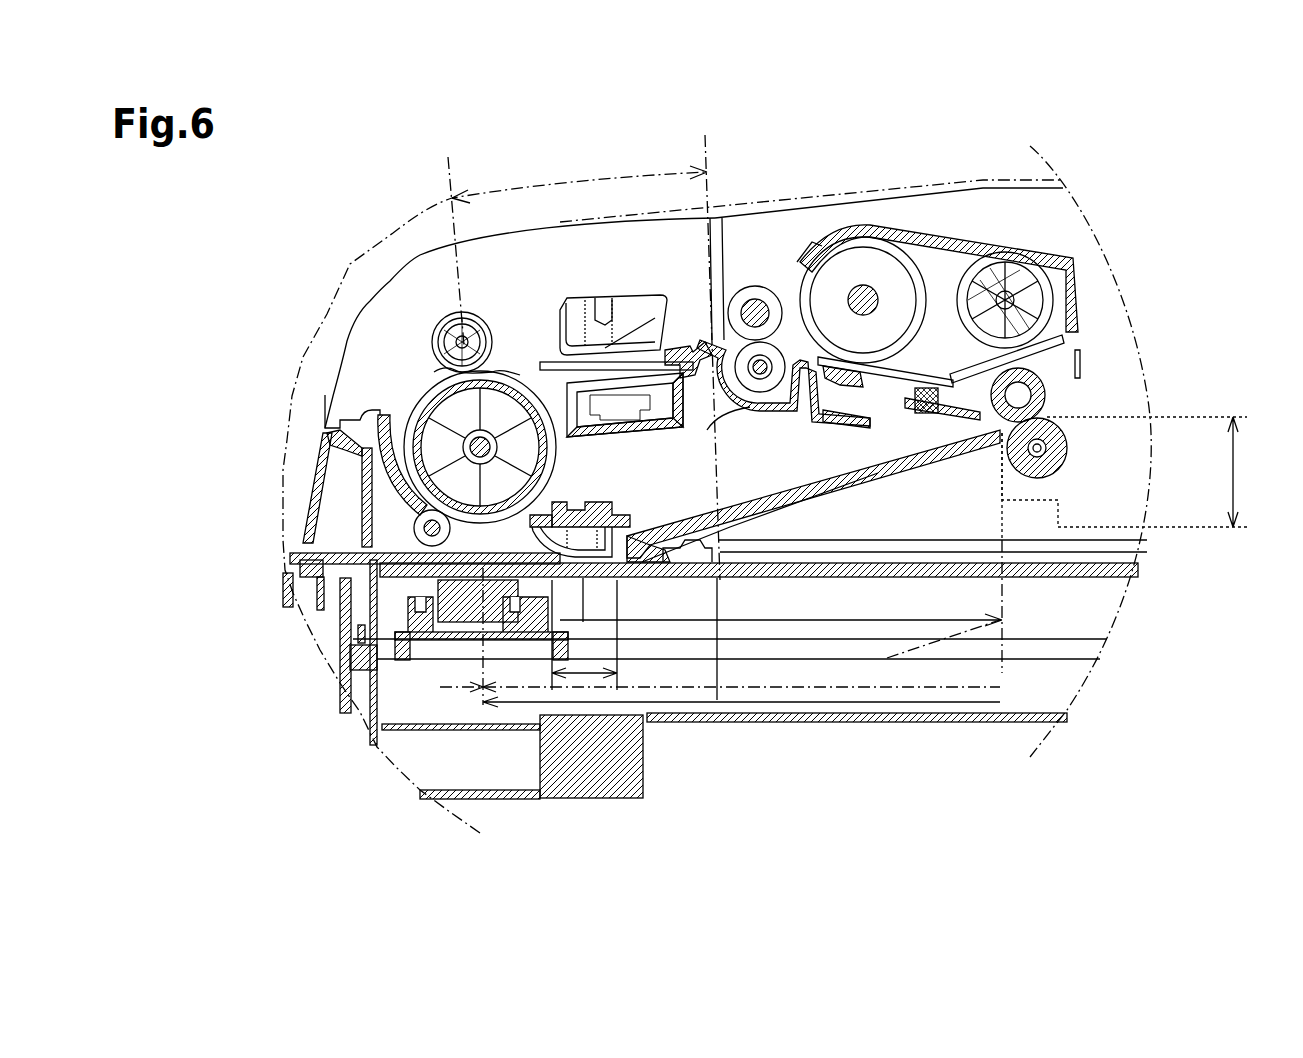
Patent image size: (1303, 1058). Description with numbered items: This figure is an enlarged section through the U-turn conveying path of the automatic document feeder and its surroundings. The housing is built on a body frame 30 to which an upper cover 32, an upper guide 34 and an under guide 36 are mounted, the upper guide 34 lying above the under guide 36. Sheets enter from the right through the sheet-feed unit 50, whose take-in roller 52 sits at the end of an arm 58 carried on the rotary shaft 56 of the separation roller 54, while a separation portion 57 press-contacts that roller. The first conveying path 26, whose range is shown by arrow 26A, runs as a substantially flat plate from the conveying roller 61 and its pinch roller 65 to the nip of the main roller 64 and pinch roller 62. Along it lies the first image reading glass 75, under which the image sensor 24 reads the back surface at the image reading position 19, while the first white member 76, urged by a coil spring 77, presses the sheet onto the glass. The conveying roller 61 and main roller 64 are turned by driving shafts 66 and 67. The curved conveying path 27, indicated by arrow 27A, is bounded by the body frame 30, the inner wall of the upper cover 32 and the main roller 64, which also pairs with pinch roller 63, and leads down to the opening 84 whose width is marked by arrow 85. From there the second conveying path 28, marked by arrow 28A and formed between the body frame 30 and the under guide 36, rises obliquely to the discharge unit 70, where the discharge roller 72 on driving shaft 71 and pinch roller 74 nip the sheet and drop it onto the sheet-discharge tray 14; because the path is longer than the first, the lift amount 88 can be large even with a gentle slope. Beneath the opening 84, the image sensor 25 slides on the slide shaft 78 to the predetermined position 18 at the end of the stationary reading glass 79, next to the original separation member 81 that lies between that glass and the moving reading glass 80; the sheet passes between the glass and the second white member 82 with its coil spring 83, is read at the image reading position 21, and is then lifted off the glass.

The sheet-discharge tray 14 is at (1115, 522).
The predetermined position 18 is at (600, 680).
The image reading position 19 is at (612, 375).
The image reading position 21 is at (586, 580).
The image sensor 24 is at (617, 436).
The image sensor 25 is at (478, 688).
The first conveying path 26 is at (693, 340).
The arrow 26A is at (598, 178).
The curved conveying path 27 is at (360, 477).
The arrow 27A is at (307, 347).
The second conveying path 28 is at (720, 532).
The arrow 28A is at (800, 658).
The body frame 30 is at (820, 565).
The upper cover 32 is at (405, 270).
The upper guide 34 is at (738, 412).
The under guide 36 is at (868, 474).
The sheet-feed unit 50 is at (1080, 205).
The take-in roller 52 is at (1042, 300).
The separation roller 54 is at (855, 248).
The rotary shaft 56 is at (868, 290).
The separation portion 57 is at (905, 372).
The arm 58 is at (1070, 246).
The conveying roller 61 is at (742, 298).
The pinch roller 62 is at (470, 330).
The pinch roller 63 is at (414, 527).
The main roller 64 is at (423, 395).
The pinch roller 65 is at (757, 393).
The driving shaft 66 is at (770, 330).
The driving shaft 67 is at (500, 455).
The discharge unit 70 is at (1088, 455).
The driving shaft 71 is at (1062, 348).
The discharge roller 72 is at (1047, 395).
The pinch roller 74 is at (1008, 446).
The first image reading glass 75 is at (638, 330).
The first white member 76 is at (608, 310).
The coil spring 77 is at (570, 305).
The slide shaft 78 is at (928, 660).
The stationary reading glass 79 is at (357, 638).
The moving reading glass 80 is at (925, 577).
The original separation member 81 is at (653, 533).
The second white member 82 is at (558, 578).
The coil spring 83 is at (612, 512).
The opening 84 is at (632, 578).
The arrow 85 is at (652, 722).
The lift amount 88 is at (1240, 472).